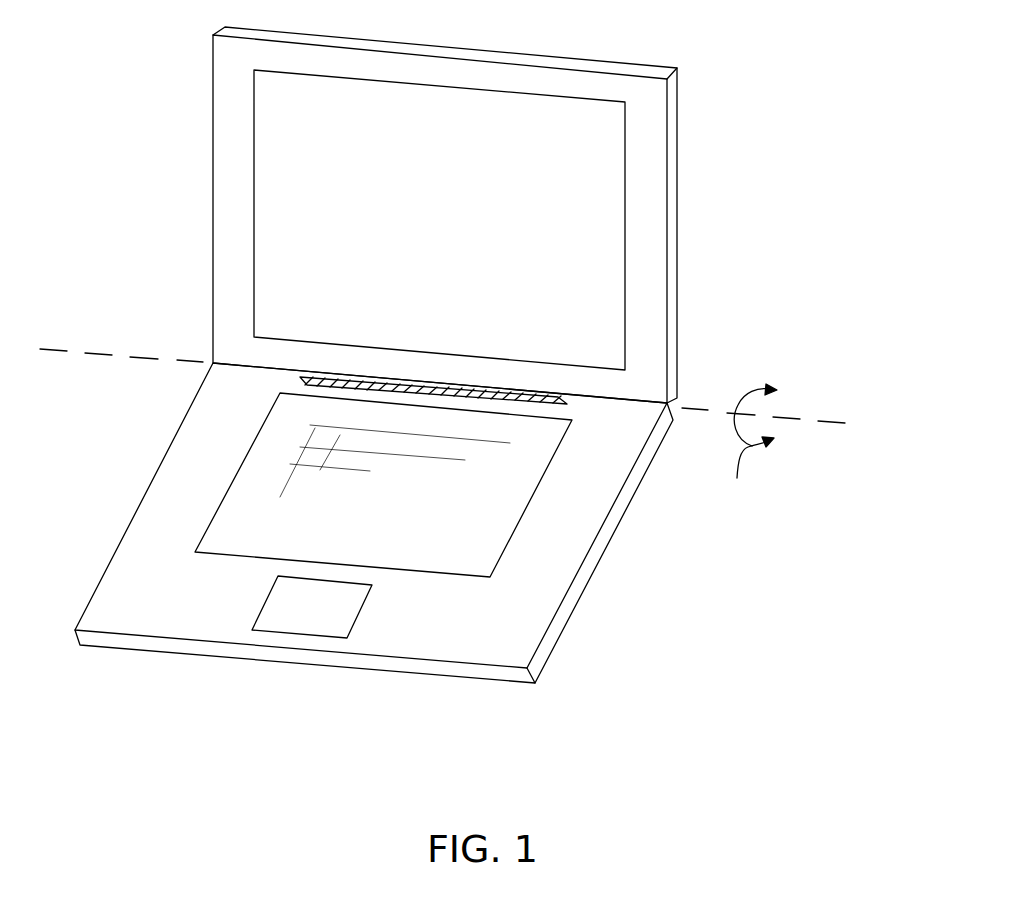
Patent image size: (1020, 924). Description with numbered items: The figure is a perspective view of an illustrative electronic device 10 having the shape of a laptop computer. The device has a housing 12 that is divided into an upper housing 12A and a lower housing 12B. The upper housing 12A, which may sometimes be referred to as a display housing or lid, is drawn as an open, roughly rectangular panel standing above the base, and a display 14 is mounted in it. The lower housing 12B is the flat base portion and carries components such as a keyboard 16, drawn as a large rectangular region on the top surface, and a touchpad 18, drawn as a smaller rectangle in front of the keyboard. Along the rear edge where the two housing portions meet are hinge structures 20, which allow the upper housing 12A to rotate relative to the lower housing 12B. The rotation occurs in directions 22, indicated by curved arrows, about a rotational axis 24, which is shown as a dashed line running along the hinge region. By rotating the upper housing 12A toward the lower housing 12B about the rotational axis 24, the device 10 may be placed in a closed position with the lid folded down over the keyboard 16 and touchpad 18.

The electronic device 10 is at (754, 66).
The housing 12 is at (678, 338).
The upper housing 12A is at (200, 38).
The lower housing 12B is at (190, 371).
The display 14 is at (587, 208).
The keyboard 16 is at (530, 505).
The touchpad 18 is at (361, 617).
The hinge structures 20 is at (543, 393).
The directions 22 is at (751, 448).
The rotational axis 24 is at (90, 352).